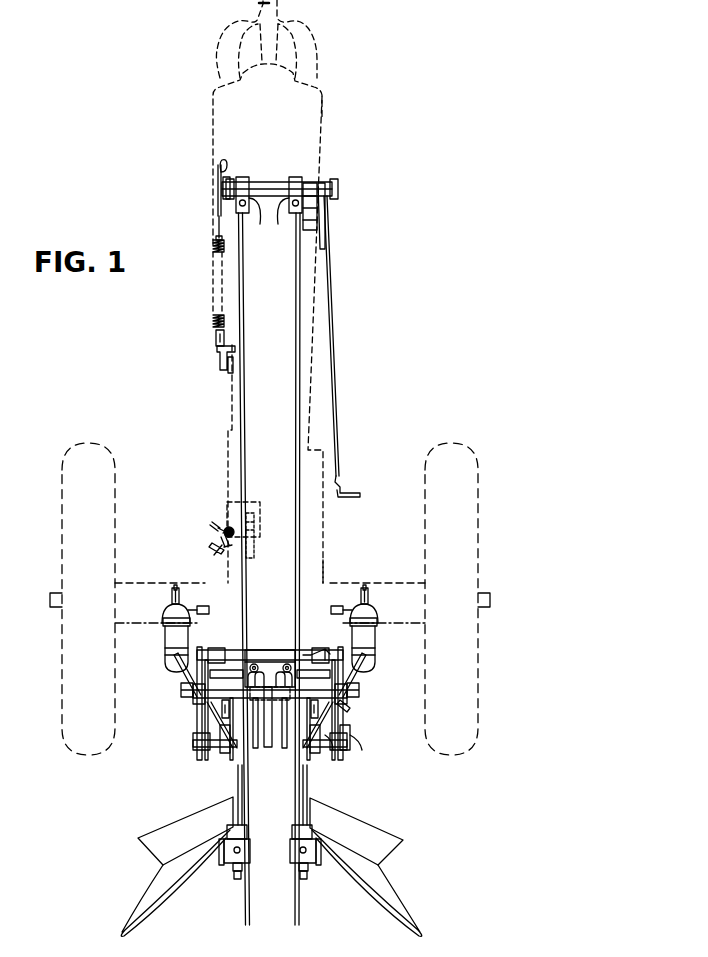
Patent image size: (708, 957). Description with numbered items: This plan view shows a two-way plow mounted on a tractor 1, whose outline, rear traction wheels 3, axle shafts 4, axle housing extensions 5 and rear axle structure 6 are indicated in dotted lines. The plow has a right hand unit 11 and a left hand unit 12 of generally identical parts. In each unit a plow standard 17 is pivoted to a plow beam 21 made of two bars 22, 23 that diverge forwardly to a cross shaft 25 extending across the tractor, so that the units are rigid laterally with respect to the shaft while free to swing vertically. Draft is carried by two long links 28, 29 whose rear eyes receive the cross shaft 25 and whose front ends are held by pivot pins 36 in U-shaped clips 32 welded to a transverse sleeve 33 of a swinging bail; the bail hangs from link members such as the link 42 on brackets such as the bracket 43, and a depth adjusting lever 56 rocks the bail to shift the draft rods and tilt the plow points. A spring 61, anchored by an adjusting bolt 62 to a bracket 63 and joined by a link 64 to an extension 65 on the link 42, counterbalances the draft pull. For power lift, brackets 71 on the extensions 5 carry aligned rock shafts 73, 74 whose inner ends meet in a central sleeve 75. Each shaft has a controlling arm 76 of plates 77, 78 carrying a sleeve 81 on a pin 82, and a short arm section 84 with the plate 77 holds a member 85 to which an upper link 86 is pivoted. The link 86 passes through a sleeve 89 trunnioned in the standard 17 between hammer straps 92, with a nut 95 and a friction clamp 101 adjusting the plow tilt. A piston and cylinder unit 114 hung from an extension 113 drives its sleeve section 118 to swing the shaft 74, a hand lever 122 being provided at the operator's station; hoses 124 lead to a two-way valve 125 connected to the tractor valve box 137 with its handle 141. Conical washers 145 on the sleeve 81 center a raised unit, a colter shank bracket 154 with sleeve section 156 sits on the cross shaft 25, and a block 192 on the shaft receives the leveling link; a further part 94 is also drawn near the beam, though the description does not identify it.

The tractor 1 is at (312, 350).
The rear traction wheels 3 is at (116, 492).
The axle shafts 4 is at (50, 593).
The extensions 5 is at (135, 583).
The rear axle structure 6 is at (329, 577).
The right hand unit 11 is at (383, 809).
The left hand unit 12 is at (154, 811).
The standard 17 is at (222, 862).
The plow beam 21 is at (216, 727).
The bar 22 is at (239, 648).
The bar 23 is at (331, 649).
The cross shaft 25 is at (172, 650).
The draft transmitting link 28 is at (242, 442).
The draft transmitting link 29 is at (298, 494).
The U-shaped clips 32 is at (243, 181).
The transverse sleeve 33 is at (262, 182).
The pivot pin 36 is at (262, 216).
The link member 42 is at (217, 184).
The bracket 43 is at (308, 223).
The depth adjusting lever 56 is at (334, 327).
The spring 61 is at (212, 283).
The adjusting bolt 62 is at (218, 333).
The bracket 63 is at (225, 362).
The link 64 is at (217, 208).
The extension 65 is at (222, 163).
The brackets 71 is at (184, 645).
The rock shaft 73 is at (200, 703).
The rock shaft 74 is at (353, 708).
The central sleeve 75 is at (264, 744).
The controlling arm 76 is at (207, 757).
The plate 77 is at (272, 762).
The plate 78 is at (352, 738).
The sleeve 81 is at (332, 750).
The pin 82 is at (362, 750).
The short arm section 84 is at (215, 713).
The member 85 is at (323, 708).
The link 86 is at (304, 801).
The sleeve 89 is at (292, 841).
The hammer straps 92 is at (248, 865).
The block 94 is at (230, 655).
The nut 95 is at (234, 880).
The friction clamp 101 is at (228, 832).
The extension 113 is at (172, 590).
The piston and cylinder unit 114 is at (162, 629).
The telescopic sleeve section 118 is at (172, 660).
The hand lever 122 is at (183, 696).
The hose 124 is at (212, 532).
The two-way valve unit 125 is at (212, 548).
The valve box 137 is at (228, 507).
The valve handle 141 is at (254, 552).
The conical washers 145 is at (227, 752).
The colter shank bracket 154 is at (253, 650).
The sleeve section 156 is at (284, 650).
The block 192 is at (323, 652).